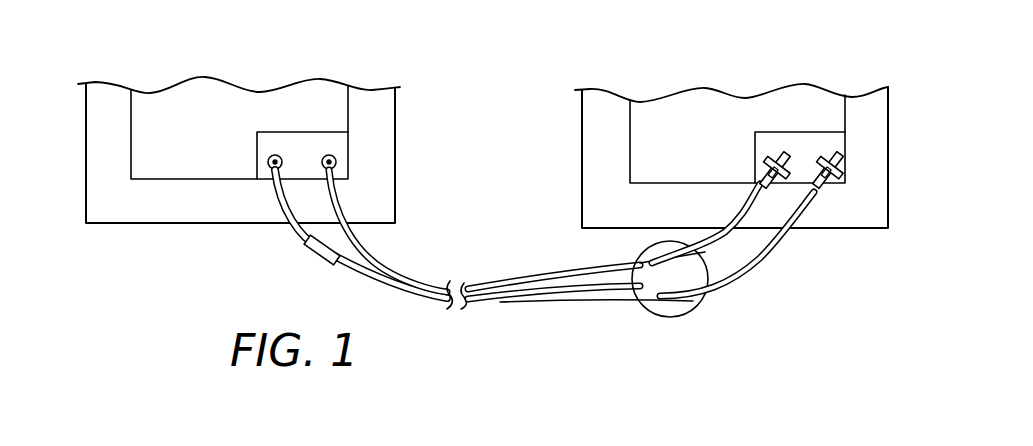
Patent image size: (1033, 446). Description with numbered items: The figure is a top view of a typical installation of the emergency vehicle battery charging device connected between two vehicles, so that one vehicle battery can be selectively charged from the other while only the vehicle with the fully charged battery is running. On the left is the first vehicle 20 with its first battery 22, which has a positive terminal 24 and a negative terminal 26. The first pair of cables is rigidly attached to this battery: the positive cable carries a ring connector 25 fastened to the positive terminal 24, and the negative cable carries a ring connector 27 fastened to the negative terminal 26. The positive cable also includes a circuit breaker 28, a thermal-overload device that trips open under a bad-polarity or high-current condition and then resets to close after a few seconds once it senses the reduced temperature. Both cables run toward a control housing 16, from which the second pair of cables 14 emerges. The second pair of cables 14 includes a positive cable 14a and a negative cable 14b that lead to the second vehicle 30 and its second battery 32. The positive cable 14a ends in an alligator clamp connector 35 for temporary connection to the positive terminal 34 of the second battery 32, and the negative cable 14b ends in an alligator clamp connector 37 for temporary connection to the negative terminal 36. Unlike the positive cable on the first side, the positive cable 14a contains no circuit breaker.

The second pair of cables 14 is at (776, 280).
The positive cable 14a is at (698, 242).
The negative cable 14b is at (780, 237).
The control housing 16 is at (685, 317).
The first vehicle 20 is at (183, 98).
The first battery 22 is at (299, 145).
The positive terminal 24 is at (274, 153).
The ring connector 25 is at (267, 159).
The negative terminal 26 is at (336, 157).
The ring connector 27 is at (337, 163).
The circuit breaker 28 is at (316, 253).
The second vehicle 30 is at (661, 107).
The second battery 32 is at (817, 132).
The positive terminal 34 is at (788, 155).
The alligator clamp connector 35 is at (756, 178).
The negative terminal 36 is at (840, 155).
The alligator clamp connector 37 is at (846, 178).